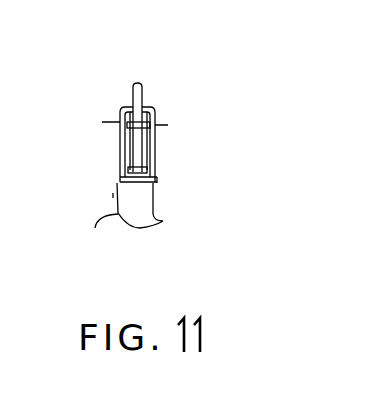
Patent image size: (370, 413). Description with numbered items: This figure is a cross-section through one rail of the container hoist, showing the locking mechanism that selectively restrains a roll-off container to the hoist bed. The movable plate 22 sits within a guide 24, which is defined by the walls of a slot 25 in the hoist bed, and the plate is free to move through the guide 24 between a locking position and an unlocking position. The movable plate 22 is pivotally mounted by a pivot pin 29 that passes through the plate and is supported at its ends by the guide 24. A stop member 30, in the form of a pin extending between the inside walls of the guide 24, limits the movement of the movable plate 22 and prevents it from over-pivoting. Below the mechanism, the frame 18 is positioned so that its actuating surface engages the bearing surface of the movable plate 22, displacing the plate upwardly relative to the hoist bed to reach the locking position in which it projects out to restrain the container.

The frame 18 is at (113, 193).
The movable plate 22 is at (140, 83).
The guide 24 is at (143, 162).
The slot 25 is at (147, 102).
The pivot pin 29 is at (157, 111).
The stop member 30 is at (152, 185).